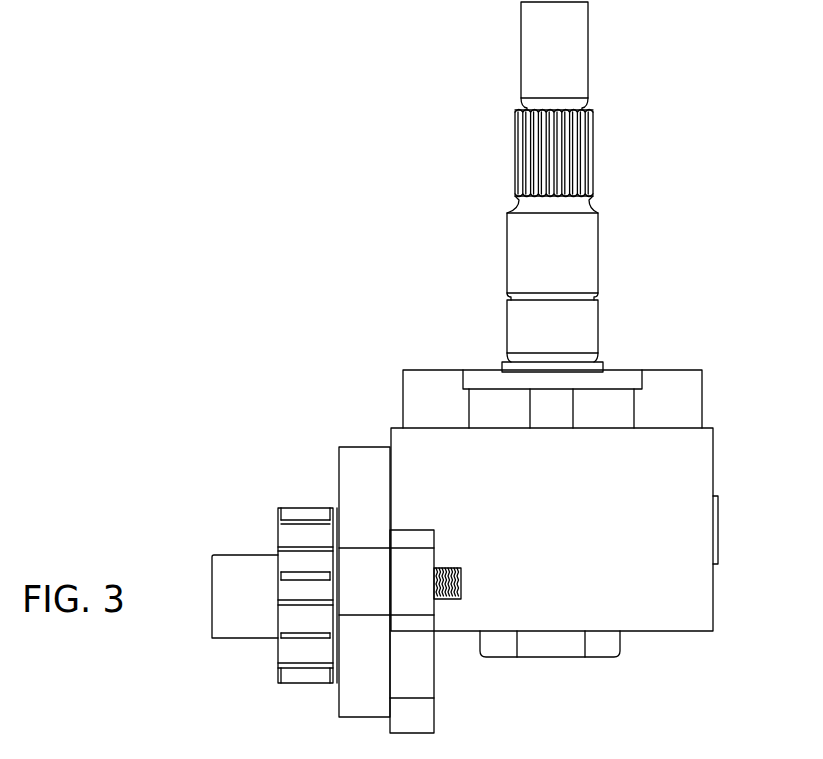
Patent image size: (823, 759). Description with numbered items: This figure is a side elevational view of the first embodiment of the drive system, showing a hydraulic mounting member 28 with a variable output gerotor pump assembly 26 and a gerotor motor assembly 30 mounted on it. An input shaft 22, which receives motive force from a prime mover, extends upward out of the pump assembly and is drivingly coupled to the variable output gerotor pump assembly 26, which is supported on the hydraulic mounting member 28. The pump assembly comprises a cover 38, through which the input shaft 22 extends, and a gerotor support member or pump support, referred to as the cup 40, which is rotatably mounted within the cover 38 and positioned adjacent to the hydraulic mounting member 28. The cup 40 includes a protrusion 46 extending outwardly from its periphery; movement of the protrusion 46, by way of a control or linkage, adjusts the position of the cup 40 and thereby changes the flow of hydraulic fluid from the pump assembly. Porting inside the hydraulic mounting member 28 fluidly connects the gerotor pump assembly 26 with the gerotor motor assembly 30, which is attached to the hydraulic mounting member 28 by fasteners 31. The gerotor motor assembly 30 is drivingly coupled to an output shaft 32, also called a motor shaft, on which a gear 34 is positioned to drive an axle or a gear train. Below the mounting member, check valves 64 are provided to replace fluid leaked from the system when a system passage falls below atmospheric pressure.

The input shaft 22 is at (588, 50).
The variable output gerotor pump assembly 26 is at (388, 336).
The hydraulic mounting member 28 is at (567, 532).
The gerotor motor assembly 30 is at (310, 467).
The fasteners 31 is at (462, 581).
The output shaft 32 is at (243, 555).
The gear 34 is at (307, 683).
The cover 38 is at (702, 397).
The cup 40 is at (501, 409).
The protrusion 46 is at (573, 407).
The check valves 64 is at (582, 657).